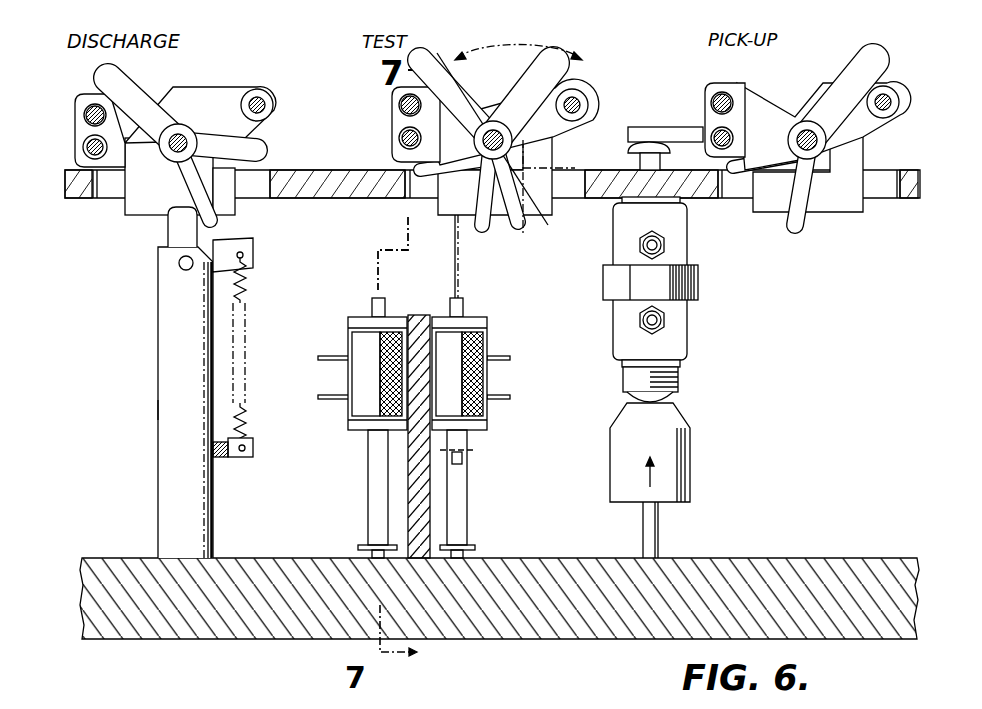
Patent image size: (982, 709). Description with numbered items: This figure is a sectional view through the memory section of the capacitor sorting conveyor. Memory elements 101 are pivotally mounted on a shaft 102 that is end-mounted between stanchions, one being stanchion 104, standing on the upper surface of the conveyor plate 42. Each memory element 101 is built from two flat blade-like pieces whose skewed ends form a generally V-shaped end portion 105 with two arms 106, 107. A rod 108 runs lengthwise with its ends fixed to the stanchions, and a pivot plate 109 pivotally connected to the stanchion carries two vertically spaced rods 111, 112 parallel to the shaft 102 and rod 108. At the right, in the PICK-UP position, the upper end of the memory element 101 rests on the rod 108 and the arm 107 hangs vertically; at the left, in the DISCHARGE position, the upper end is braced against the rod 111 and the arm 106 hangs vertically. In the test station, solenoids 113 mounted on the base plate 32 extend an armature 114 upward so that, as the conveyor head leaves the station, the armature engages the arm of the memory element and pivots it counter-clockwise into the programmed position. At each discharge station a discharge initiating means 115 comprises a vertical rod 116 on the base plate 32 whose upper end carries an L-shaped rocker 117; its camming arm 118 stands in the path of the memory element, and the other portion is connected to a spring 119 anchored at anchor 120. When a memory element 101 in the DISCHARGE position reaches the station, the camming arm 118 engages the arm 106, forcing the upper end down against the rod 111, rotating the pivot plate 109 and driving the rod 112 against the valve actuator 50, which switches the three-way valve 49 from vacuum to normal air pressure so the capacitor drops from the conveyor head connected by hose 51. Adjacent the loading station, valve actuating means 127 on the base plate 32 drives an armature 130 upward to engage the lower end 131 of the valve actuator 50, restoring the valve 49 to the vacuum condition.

The base plate 32 is at (773, 565).
The conveyor plate 42 is at (338, 172).
The three-way valve 49 is at (692, 315).
The valve actuator 50 is at (630, 148).
The hose 51 is at (668, 250).
The memory element 101 is at (130, 68).
The shaft 102 is at (183, 135).
The stanchion 104 is at (127, 207).
The V-shaped end portion 105 is at (195, 182).
The arm 106 is at (215, 213).
The arm 107 is at (258, 150).
The rod 108 is at (264, 101).
The pivot plate 109 is at (115, 135).
The rod 111 is at (93, 108).
The rod 112 is at (84, 150).
The solenoid 113 is at (362, 407).
The armature 114 is at (463, 278).
The discharge initiating means 115 is at (168, 342).
The rod 116 is at (178, 411).
The L-shaped rocker 117 is at (237, 236).
The camming arm 118 is at (178, 220).
The spring 119 is at (244, 297).
The anchor 120 is at (222, 455).
The valve actuating means 127 is at (638, 504).
The armature 130 is at (690, 450).
The lower end 131 is at (672, 398).